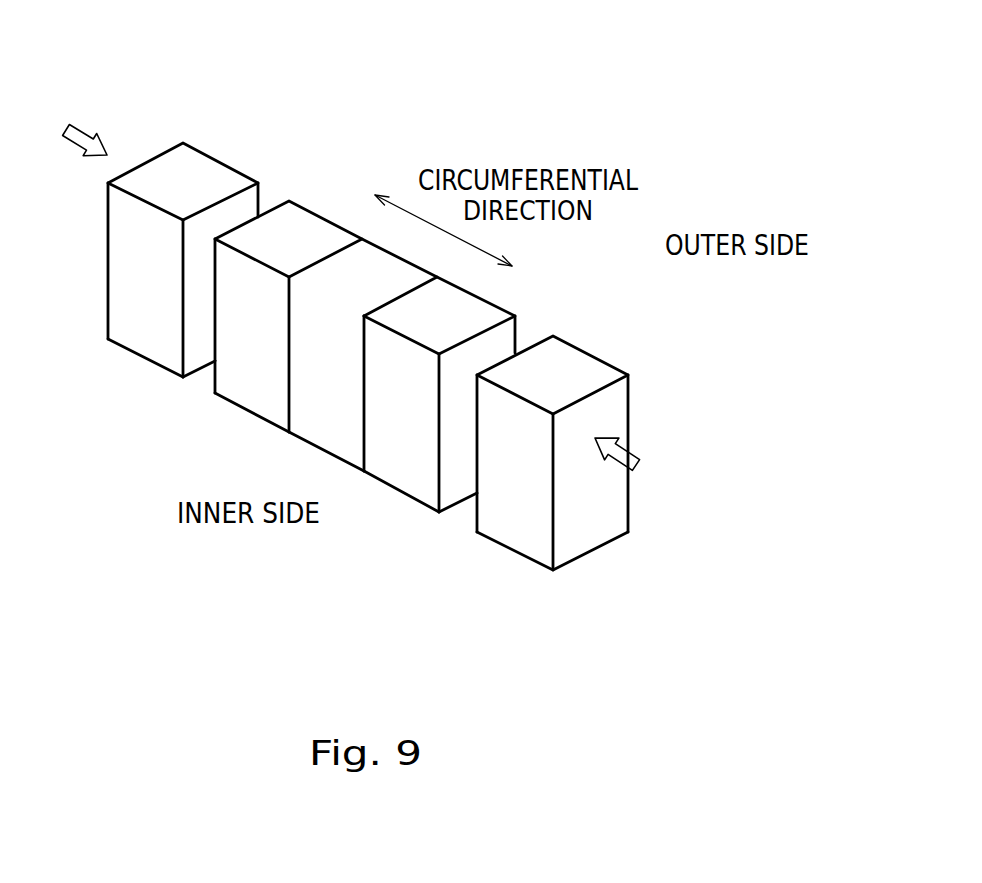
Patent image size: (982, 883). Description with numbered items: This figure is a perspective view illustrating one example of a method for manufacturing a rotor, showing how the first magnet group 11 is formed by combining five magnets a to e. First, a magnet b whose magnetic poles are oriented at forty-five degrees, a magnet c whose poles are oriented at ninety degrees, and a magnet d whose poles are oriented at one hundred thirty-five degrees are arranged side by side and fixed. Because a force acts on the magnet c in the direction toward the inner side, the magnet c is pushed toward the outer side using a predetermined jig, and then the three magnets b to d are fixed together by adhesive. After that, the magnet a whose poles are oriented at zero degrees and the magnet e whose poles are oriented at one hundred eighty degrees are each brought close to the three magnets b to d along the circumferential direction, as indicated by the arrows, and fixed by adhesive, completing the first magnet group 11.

The first magnet group 11 is at (351, 294).
The magnet a is at (183, 260).
The magnet b is at (288, 316).
The magnet c is at (363, 355).
The magnet d is at (439, 394).
The magnet e is at (552, 453).